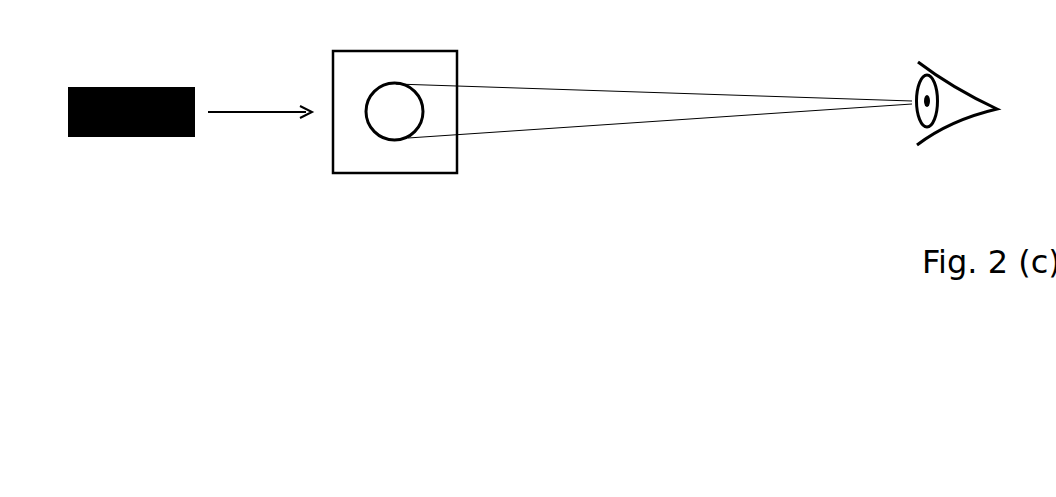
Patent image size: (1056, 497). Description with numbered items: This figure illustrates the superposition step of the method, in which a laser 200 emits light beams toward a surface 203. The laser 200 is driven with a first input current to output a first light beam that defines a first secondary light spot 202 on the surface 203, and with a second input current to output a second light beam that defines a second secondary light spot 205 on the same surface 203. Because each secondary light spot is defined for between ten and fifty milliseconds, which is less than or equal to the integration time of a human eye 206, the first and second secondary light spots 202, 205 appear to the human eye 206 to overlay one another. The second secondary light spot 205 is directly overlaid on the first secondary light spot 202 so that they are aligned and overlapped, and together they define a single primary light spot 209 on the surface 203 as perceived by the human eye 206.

The laser 200 is at (92, 137).
The first secondary light spot 202 is at (396, 83).
The surface 203 is at (400, 163).
The second secondary light spot 205 is at (414, 87).
The human eye 206 is at (943, 82).
The primary light spot 209 is at (402, 113).